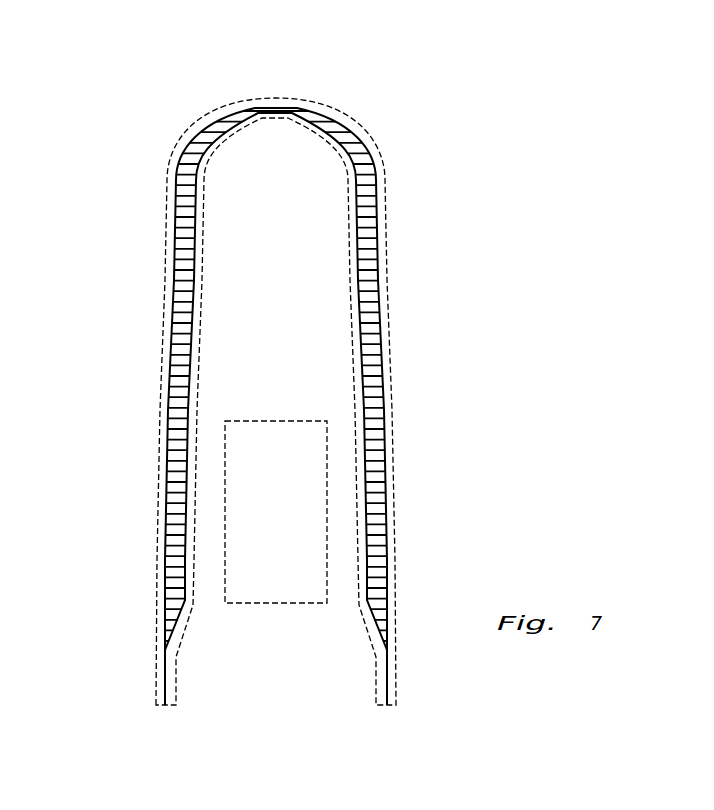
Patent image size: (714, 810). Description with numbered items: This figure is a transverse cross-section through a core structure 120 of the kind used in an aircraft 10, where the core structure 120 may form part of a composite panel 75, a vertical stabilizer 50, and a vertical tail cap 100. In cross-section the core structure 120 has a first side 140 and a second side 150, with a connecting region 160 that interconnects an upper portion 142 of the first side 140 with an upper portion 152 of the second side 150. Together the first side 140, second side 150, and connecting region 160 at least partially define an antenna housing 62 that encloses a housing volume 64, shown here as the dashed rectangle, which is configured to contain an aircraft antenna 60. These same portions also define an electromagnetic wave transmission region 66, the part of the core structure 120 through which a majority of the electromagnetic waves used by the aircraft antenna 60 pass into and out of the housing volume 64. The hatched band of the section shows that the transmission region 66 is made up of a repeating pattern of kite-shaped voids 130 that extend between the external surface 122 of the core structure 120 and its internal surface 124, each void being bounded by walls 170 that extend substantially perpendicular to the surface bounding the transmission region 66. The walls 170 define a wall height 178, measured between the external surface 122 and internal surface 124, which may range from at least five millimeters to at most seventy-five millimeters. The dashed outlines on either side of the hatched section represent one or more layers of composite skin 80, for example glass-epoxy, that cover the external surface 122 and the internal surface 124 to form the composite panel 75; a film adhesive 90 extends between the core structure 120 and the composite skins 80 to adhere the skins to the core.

The aircraft 10 is at (607, 147).
The vertical stabilizer 50 is at (600, 220).
The aircraft antenna 60 is at (330, 524).
The antenna housing 62 is at (382, 97).
The housing volume 64 is at (342, 468).
The electromagnetic wave transmission region 66 is at (238, 78).
The composite panel 75 is at (208, 72).
The composite skin 80 is at (347, 220).
The film adhesive 90 is at (175, 212).
The vertical tail cap 100 is at (583, 282).
The core structure 120 is at (197, 93).
The external surface 122 is at (165, 597).
The internal surface 124 is at (196, 240).
The kite-shaped voids 130 is at (172, 550).
The first side 140 is at (167, 413).
The upper portion of first side 142 is at (175, 133).
The second side 150 is at (386, 404).
The upper portion of second side 152 is at (388, 147).
The connecting region 160 is at (273, 107).
The walls 170 is at (175, 470).
The wall height 178 is at (224, 268).